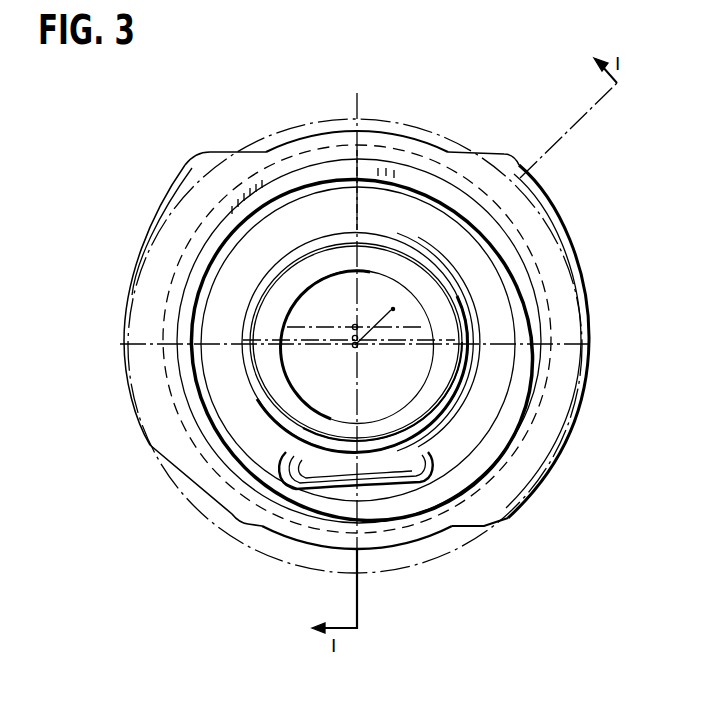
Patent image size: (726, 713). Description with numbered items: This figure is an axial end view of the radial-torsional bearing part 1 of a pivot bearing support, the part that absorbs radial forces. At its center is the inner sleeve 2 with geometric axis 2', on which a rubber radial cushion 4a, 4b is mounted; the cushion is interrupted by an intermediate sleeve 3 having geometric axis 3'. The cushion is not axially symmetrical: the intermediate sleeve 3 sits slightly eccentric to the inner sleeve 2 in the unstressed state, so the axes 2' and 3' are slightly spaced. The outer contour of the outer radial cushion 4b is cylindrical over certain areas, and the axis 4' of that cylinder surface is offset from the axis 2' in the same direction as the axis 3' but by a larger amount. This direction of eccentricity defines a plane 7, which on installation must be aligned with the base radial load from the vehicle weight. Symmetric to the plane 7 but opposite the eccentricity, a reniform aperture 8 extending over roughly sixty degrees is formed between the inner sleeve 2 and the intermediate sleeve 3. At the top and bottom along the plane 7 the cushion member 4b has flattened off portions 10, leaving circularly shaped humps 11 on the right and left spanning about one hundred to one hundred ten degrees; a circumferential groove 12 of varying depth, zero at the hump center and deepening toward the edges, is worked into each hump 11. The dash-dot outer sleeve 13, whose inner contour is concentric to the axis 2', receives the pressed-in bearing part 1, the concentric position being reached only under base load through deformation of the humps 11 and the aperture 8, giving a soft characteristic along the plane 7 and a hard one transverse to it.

The radial-torsional bearing part 1 is at (538, 505).
The inner sleeve 2 is at (384, 347).
The intermediate sleeve 3 is at (362, 350).
The inner radial cushion 4a is at (398, 227).
The outer radial cushion 4b is at (448, 173).
The plane 7 is at (355, 211).
The reniform aperture 8 is at (412, 482).
The flattened off portions 10 is at (229, 155).
The circularly shaped humps 11 is at (572, 233).
The groove 12 is at (532, 207).
The outer sleeve 13 is at (322, 118).
The geometric axis of inner sleeve 2' is at (367, 363).
The geometric axis of intermediate sleeve 3' is at (336, 360).
The axis of cylinder surface 4' is at (344, 311).